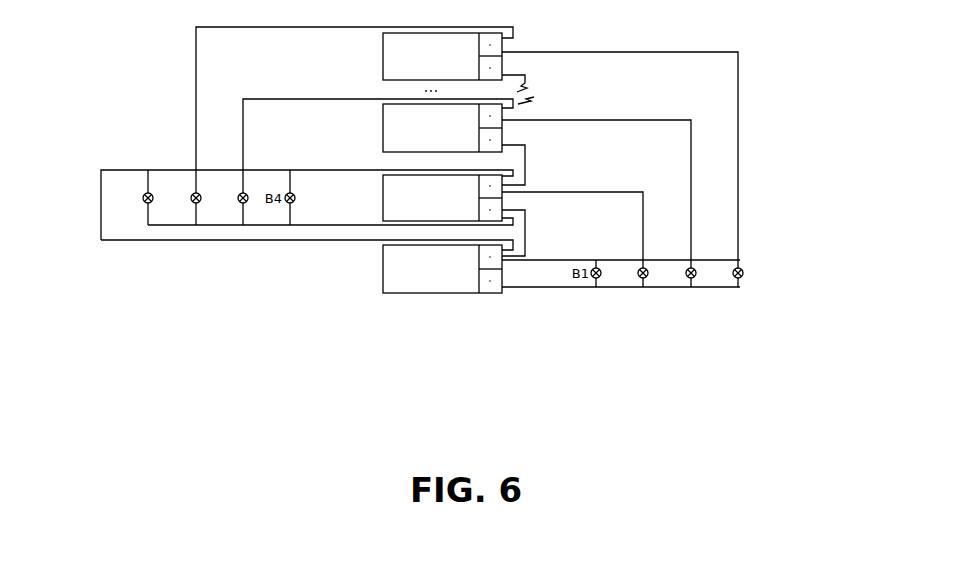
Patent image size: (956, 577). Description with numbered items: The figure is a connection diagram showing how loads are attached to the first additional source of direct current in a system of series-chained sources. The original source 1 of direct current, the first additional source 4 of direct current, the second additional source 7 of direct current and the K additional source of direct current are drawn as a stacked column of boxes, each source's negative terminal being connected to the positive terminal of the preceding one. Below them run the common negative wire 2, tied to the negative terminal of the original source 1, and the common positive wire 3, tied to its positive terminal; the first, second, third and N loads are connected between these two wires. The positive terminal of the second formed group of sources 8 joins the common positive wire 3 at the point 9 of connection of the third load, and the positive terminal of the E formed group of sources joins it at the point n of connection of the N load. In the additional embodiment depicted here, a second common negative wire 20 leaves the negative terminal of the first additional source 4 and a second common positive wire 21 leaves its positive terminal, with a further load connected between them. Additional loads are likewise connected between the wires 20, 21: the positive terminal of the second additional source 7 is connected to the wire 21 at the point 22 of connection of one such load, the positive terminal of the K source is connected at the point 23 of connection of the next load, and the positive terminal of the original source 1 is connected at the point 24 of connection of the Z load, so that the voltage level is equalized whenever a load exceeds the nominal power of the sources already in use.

The original source of direct current 1 is at (442, 269).
The first additional source of direct current 4 is at (442, 198).
The second additional source of direct current 7 is at (442, 128).
The K additional source of direct current K is at (442, 56).
The common negative wire 2 is at (542, 288).
The common positive wire 3 is at (544, 259).
The point of connection of third load 8 is at (648, 259).
The point of connection of third load 9 is at (696, 259).
The point of connection of N load n is at (743, 259).
The second common negative wire 20 is at (322, 241).
The second common positive wire 21 is at (320, 169).
The point of connection of load B5 22 is at (243, 169).
The point of connection of load B6 23 is at (196, 169).
The point of connection of Z load 24 is at (148, 169).